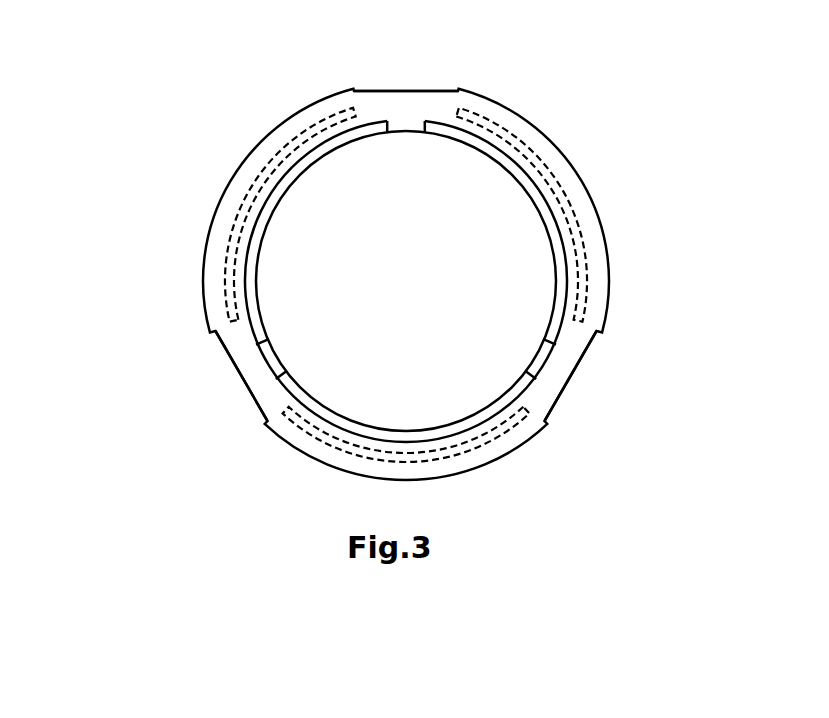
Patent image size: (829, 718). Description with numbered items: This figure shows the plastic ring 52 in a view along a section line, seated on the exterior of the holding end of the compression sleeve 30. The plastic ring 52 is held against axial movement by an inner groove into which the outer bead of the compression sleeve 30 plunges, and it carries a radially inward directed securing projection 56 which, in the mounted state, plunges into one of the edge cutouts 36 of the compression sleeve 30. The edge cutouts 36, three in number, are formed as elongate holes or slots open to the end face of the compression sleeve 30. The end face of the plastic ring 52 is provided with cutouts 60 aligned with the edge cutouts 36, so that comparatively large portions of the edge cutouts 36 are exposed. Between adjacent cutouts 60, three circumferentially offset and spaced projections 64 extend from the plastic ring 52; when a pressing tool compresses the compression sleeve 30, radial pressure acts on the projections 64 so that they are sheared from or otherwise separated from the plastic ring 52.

The compression sleeve 30 is at (553, 236).
The edge cutouts 36 is at (382, 124).
The plastic ring 52 is at (253, 173).
The securing projection 56 is at (403, 125).
The cutouts 60 is at (411, 62).
The projections 64 is at (230, 227).